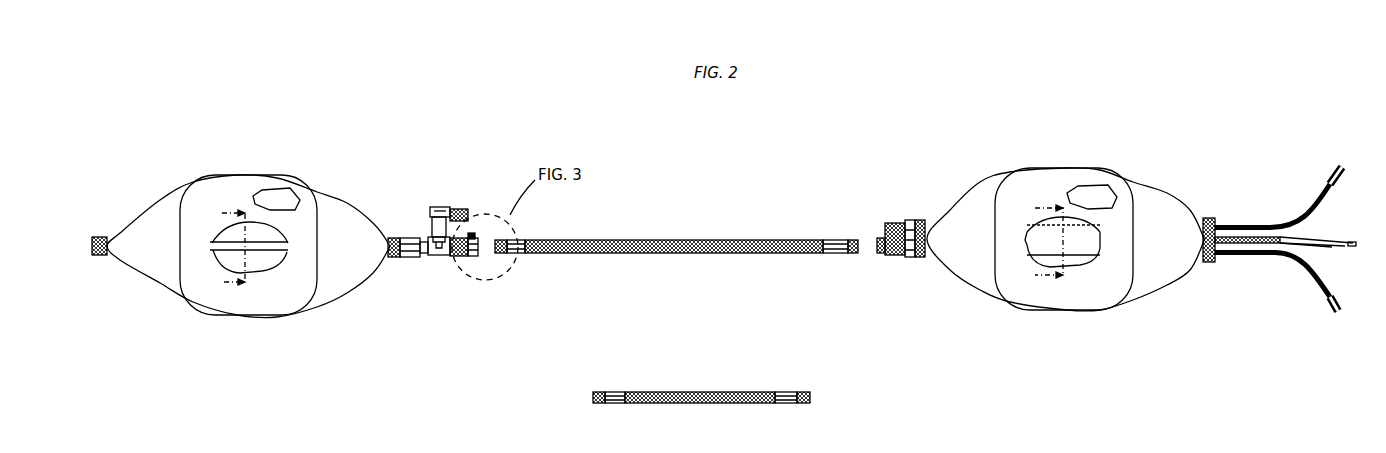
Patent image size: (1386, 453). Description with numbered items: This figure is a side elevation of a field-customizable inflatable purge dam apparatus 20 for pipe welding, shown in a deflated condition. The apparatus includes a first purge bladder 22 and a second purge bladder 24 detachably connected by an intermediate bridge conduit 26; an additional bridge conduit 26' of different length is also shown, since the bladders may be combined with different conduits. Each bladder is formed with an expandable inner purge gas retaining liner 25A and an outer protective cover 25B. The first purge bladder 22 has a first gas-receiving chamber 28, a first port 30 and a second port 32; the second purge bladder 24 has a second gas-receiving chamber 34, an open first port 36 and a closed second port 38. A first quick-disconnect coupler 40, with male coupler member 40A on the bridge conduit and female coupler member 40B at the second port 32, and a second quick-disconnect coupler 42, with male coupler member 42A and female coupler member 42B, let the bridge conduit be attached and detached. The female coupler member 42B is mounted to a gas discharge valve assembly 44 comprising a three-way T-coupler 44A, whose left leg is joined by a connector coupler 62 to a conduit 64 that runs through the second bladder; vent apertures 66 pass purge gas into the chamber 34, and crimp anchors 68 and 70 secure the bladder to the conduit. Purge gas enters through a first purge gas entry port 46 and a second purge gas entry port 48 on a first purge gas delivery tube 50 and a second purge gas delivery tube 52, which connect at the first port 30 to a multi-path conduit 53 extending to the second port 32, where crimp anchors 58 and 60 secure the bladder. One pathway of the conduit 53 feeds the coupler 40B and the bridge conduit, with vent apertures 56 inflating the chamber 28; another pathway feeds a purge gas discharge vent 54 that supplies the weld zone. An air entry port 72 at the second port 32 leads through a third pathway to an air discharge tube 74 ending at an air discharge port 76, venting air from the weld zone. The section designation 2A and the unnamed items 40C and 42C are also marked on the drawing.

The inflatable purge dam apparatus 20 is at (378, 95).
The first purge bladder 22 is at (1031, 172).
The second purge bladder 24 is at (212, 177).
The inner purge gas retaining liner 25A is at (276, 200).
The outer protective cover 25B is at (318, 200).
The bridge conduit 26 is at (674, 222).
The additional bridge conduit 26' is at (700, 371).
The first interior gas-receiving chamber 28 is at (1028, 245).
The section line 2A is at (1035, 241).
The first port 30 is at (1215, 262).
The second port 32 is at (916, 260).
The second interior gas-receiving chamber 34 is at (268, 260).
The first port 36 is at (405, 258).
The second port 38 is at (97, 256).
The first quick-disconnect coupler 40 is at (866, 262).
The male coupler member 40A is at (840, 255).
The female coupler member 40B is at (882, 257).
The connector tip 40C is at (878, 240).
The second quick-disconnect coupler 42 is at (492, 270).
The male coupler member 42A is at (505, 256).
The female coupler member 42B is at (460, 258).
The valve band 42C is at (472, 233).
The gas discharge valve assembly 44 is at (450, 207).
The three-way T-coupler 44A is at (437, 257).
The first purge gas entry port 46 is at (1326, 305).
The second purge gas entry port 48 is at (1323, 186).
The first inflation purge gas delivery tube 50 is at (1281, 256).
The second inflation purge gas delivery tube 52 is at (1259, 225).
The multi-path conduit 53 is at (1105, 250).
The purge gas discharge vent 54 is at (905, 222).
The vent aperture 56 is at (1070, 263).
The crimp anchor 58 is at (1206, 218).
The crimp anchor 60 is at (921, 220).
The connector coupler 62 is at (416, 237).
The conduit 64 is at (287, 253).
The vent aperture 66 is at (247, 255).
The crimp anchor 68 is at (392, 238).
The crimp anchor 70 is at (100, 237).
The air entry port 72 is at (893, 225).
The air discharge tube 74 is at (1333, 248).
The air discharge port 76 is at (1355, 247).